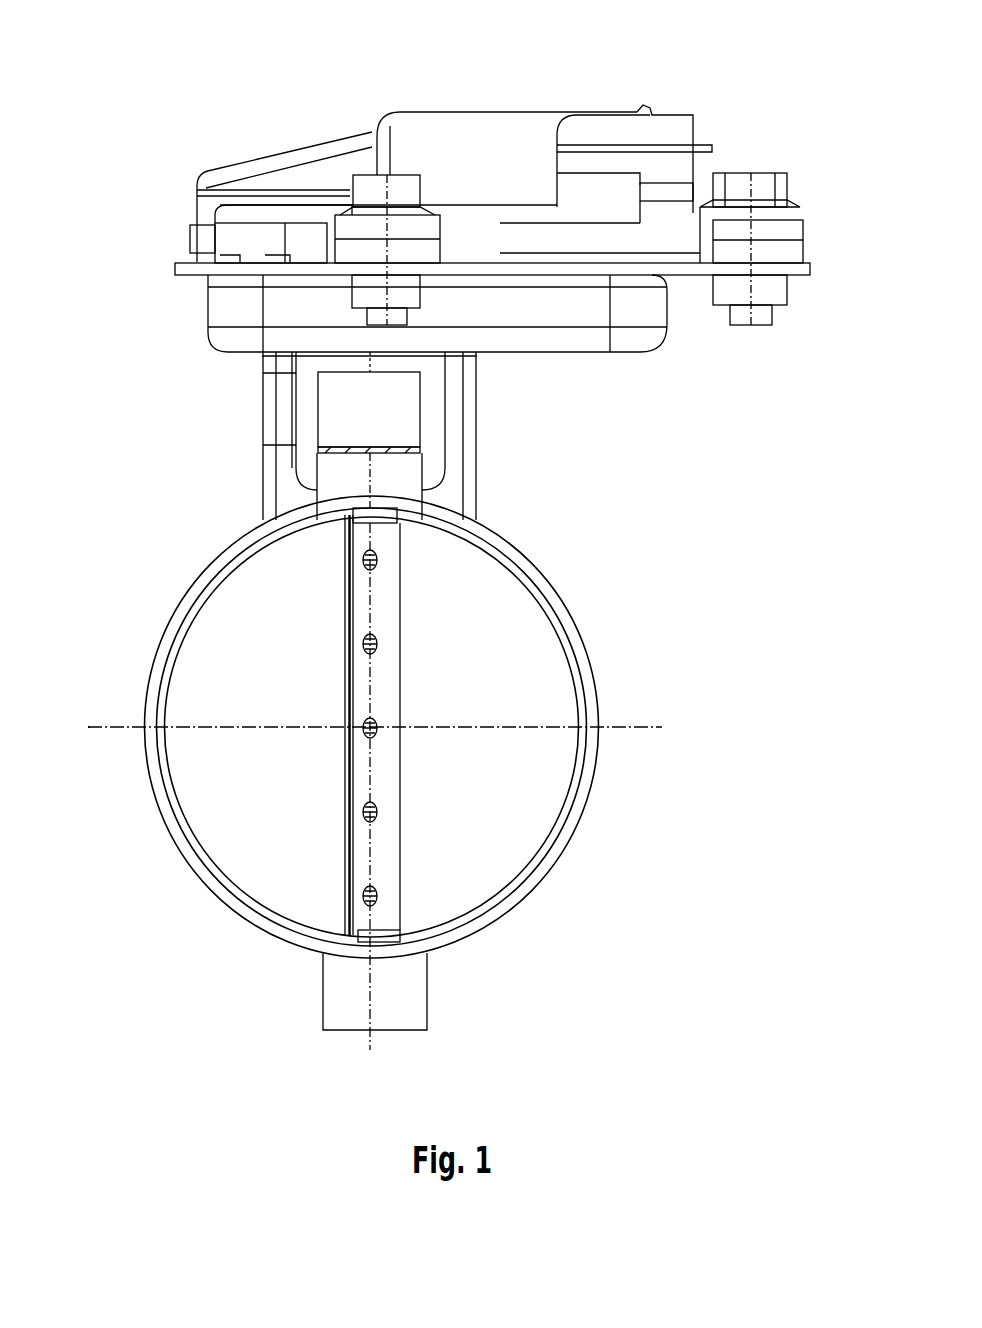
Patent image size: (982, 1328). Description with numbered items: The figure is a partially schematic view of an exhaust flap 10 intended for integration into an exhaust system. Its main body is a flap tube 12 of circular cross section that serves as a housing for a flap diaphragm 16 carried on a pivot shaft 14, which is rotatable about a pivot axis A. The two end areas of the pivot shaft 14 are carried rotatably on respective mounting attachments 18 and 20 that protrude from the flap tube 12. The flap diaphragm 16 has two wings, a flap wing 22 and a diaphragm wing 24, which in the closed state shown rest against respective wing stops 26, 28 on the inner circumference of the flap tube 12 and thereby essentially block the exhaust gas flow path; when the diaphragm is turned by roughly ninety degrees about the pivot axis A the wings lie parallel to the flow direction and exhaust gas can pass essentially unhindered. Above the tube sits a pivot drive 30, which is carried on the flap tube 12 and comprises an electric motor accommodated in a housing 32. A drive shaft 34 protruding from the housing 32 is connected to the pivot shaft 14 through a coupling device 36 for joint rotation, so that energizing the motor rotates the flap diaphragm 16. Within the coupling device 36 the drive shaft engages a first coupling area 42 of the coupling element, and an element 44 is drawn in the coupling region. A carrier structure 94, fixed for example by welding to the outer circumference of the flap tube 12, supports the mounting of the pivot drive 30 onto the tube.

The exhaust flap 10 is at (658, 962).
The flap tube 12 is at (580, 630).
The pivot shaft 14 is at (380, 940).
The flap diaphragm 16 is at (266, 862).
The mounting attachment 18 is at (396, 482).
The mounting attachment 20 is at (352, 996).
The flap wing 22 is at (208, 777).
The diaphragm wing 24 is at (532, 797).
The wing stop 26 is at (195, 608).
The wing stop 28 is at (577, 706).
The pivot drive 30 is at (480, 100).
The housing 32 is at (660, 340).
The drive shaft 34 is at (410, 360).
The coupling device 36 is at (243, 422).
The first coupling area 42 is at (362, 374).
The coupling element 44 is at (340, 455).
The carrier structure 94 is at (478, 421).
The pivot axis A is at (370, 597).